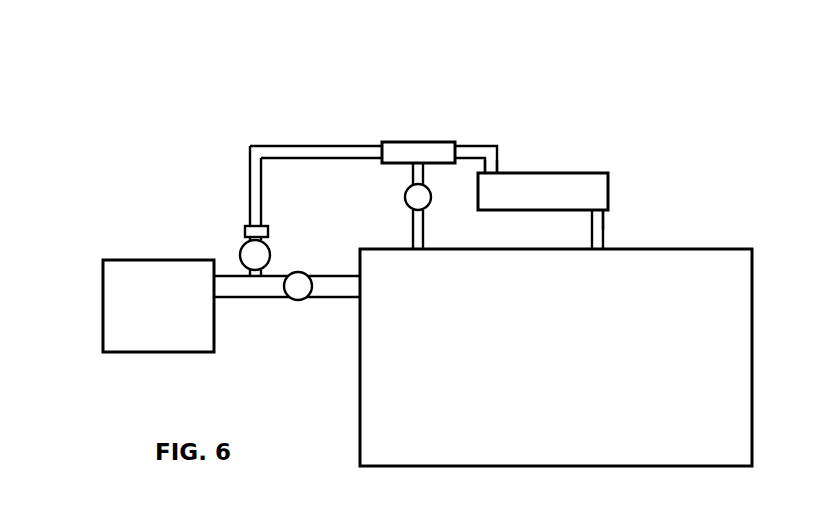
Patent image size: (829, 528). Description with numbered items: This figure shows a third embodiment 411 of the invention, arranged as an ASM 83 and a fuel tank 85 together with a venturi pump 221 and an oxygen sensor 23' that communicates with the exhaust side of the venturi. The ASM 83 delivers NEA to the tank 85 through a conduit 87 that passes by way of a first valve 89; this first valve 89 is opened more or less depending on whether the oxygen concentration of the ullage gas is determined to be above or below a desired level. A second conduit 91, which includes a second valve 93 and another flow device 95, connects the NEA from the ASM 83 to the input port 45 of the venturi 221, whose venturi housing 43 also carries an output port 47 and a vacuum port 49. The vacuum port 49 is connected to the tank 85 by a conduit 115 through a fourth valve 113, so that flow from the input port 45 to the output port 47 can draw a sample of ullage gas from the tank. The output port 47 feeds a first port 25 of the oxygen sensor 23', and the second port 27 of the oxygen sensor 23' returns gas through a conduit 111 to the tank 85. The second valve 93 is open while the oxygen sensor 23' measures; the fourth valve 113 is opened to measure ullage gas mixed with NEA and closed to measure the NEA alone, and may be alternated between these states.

The third embodiment 411 is at (156, 116).
The ASM 83 is at (158, 260).
The fuel tank 85 is at (725, 250).
The conduit 87 is at (240, 298).
The first valve 89 is at (297, 298).
The conduit 91 is at (270, 144).
The input port 45 is at (365, 145).
The venturi housing 43 is at (420, 140).
The venturi device 221 is at (447, 118).
The output port 47 is at (470, 142).
The first port 25 is at (498, 152).
The oxygen sensor 23' is at (554, 168).
The second port 27 is at (605, 220).
The conduit 111 is at (604, 230).
The vacuum port 49 is at (413, 178).
The fourth valve 113 is at (405, 195).
The conduit 115 is at (424, 230).
The flow device 95 is at (247, 230).
The second valve 93 is at (243, 255).